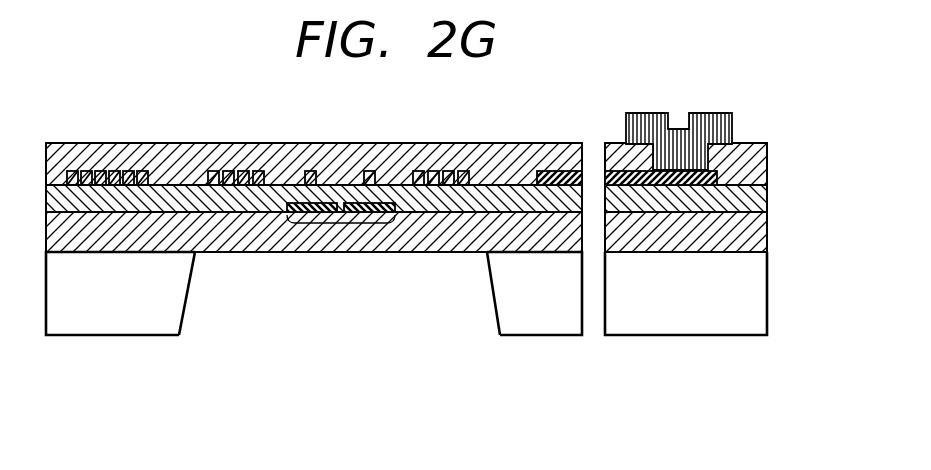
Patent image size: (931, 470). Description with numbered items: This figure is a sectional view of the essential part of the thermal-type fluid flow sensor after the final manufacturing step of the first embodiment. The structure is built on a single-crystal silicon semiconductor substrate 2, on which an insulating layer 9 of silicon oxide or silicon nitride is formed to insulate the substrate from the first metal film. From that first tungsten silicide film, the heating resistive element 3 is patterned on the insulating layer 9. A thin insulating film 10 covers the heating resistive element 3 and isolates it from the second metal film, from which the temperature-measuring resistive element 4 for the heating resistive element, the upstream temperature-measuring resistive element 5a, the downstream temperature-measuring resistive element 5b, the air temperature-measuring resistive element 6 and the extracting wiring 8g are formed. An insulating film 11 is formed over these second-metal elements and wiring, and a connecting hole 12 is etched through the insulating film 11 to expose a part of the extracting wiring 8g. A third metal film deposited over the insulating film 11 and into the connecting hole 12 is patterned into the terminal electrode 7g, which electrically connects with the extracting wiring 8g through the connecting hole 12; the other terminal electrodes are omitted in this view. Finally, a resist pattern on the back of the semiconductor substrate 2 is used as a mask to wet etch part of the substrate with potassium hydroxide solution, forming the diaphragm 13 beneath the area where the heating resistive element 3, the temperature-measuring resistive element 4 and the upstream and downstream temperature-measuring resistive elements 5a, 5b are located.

The semiconductor substrate 2 is at (540, 326).
The heating resistive element 3 is at (338, 224).
The temperature-measuring resistive element for the heating resistive element 4 is at (302, 140).
The upstream temperature-measuring resistive element 5a is at (203, 140).
The downstream temperature-measuring resistive element 5b is at (411, 140).
The air temperature-measuring resistive element 6 is at (157, 140).
The terminal electrode 7g is at (733, 113).
The extracting wiring 8g is at (553, 171).
The insulating layer 9 is at (703, 243).
The insulating film 10 is at (758, 193).
The insulating film 11 is at (758, 157).
The connecting hole 12 is at (698, 157).
The diaphragm 13 is at (481, 263).